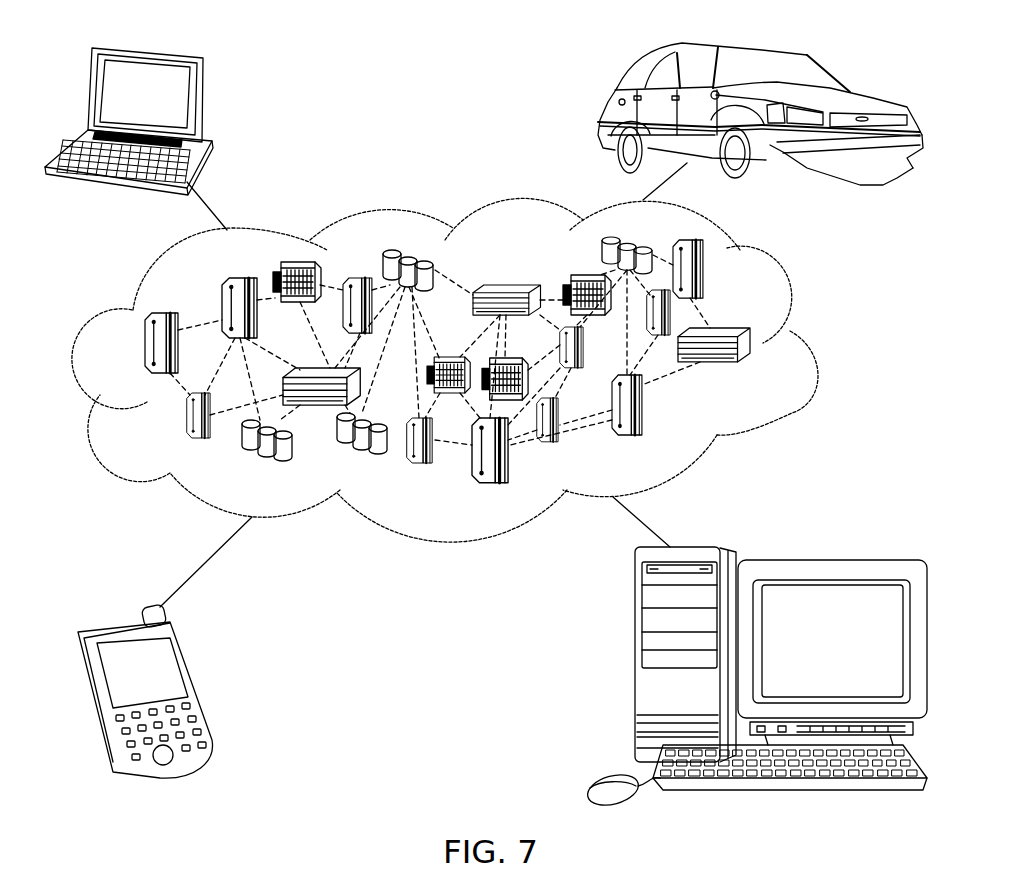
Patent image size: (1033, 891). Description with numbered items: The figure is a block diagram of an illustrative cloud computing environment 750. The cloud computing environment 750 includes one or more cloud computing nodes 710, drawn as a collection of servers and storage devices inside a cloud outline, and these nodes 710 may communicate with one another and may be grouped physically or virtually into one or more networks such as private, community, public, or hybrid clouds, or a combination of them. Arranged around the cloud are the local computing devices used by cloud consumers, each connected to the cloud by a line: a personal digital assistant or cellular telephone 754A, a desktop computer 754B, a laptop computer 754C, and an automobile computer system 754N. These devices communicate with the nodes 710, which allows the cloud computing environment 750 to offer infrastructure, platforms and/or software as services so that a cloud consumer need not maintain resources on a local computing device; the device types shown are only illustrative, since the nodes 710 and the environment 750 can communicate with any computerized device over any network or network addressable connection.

The cloud computing environment 750 is at (795, 300).
The cloud computing nodes 710 is at (798, 370).
The personal digital assistant (PDA) or cellular telephone 754A is at (193, 682).
The desktop computer 754B is at (635, 611).
The laptop computer 754C is at (203, 93).
The automobile computer system 754N is at (610, 123).